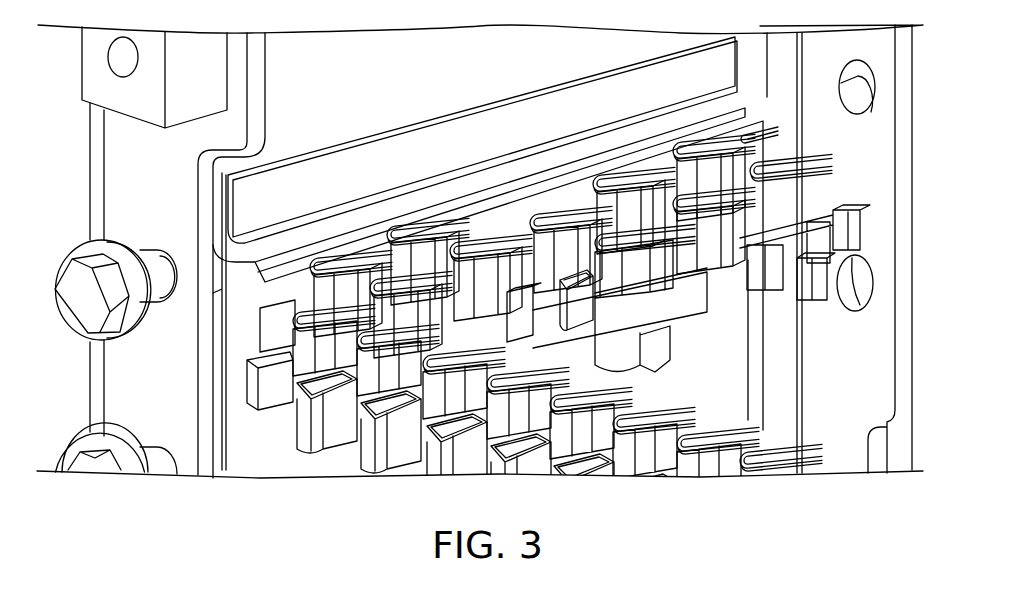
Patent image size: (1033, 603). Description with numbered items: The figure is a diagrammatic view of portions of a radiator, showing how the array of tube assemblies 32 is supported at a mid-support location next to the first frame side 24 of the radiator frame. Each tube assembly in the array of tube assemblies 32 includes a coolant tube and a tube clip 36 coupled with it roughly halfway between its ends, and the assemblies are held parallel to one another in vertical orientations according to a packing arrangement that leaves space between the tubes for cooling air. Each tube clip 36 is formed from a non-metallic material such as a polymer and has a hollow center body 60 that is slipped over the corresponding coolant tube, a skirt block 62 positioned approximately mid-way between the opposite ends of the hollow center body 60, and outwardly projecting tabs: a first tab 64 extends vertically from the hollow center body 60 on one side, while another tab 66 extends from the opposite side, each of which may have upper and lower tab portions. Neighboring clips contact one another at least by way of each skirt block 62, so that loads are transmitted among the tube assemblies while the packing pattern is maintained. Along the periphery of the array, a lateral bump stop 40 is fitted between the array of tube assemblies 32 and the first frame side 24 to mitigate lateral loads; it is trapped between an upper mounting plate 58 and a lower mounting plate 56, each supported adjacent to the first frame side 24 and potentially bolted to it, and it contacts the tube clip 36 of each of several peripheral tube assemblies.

The first frame side 24 is at (108, 186).
The array of tube assemblies 32 is at (873, 193).
The tube clip 36 is at (848, 164).
The lateral bump stop 40 is at (232, 330).
The lower mounting plate 56 is at (272, 418).
The upper mounting plate 58 is at (372, 136).
The hollow center body 60 is at (840, 155).
The skirt block 62 is at (853, 229).
The first tab 64 is at (777, 163).
The tab 66 is at (812, 297).